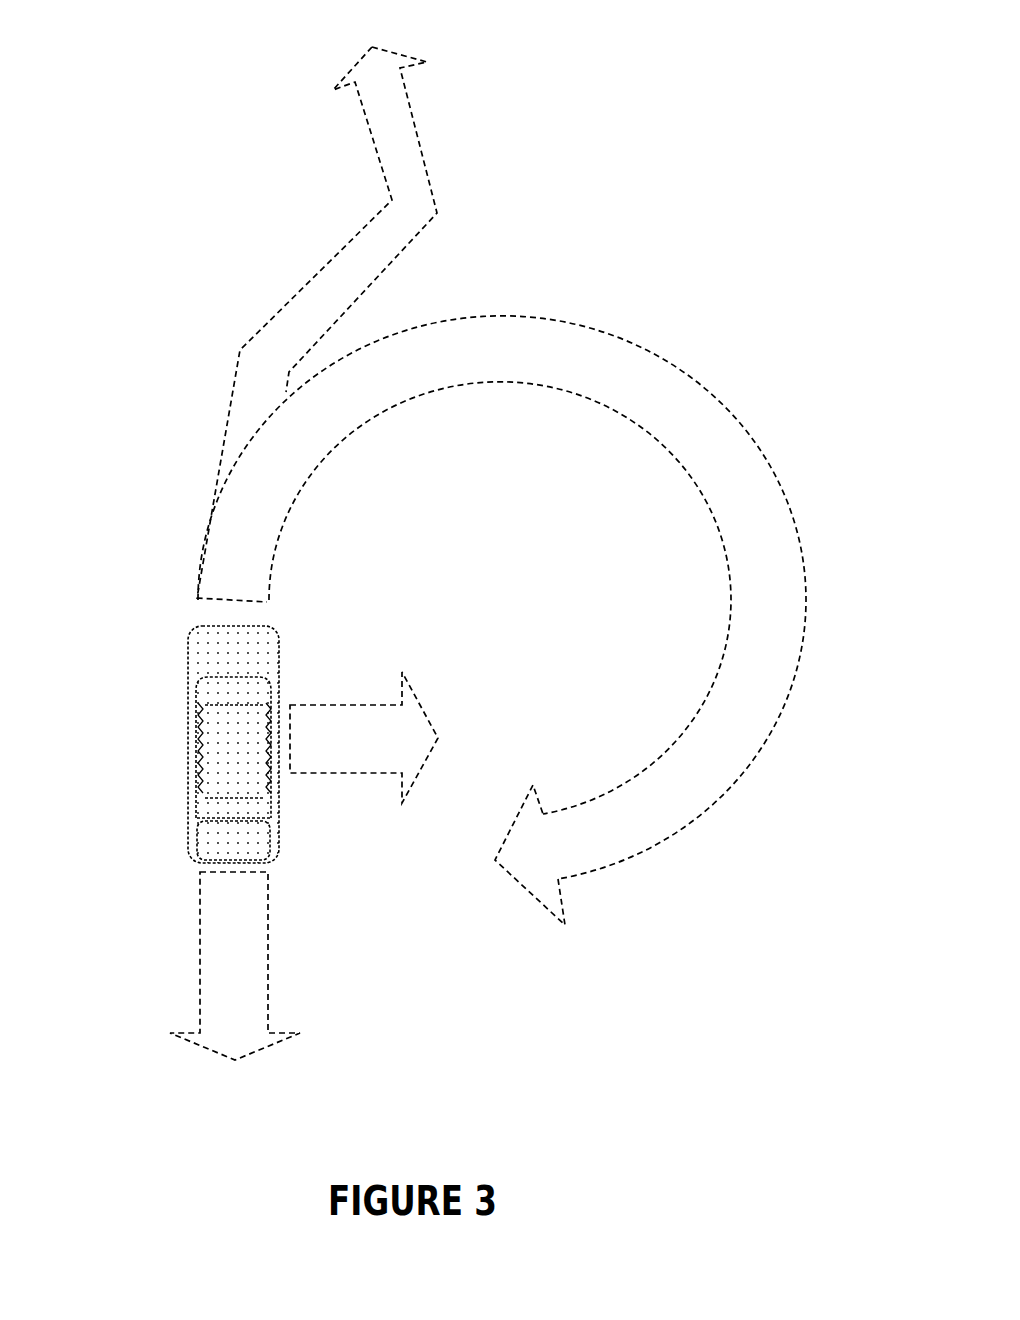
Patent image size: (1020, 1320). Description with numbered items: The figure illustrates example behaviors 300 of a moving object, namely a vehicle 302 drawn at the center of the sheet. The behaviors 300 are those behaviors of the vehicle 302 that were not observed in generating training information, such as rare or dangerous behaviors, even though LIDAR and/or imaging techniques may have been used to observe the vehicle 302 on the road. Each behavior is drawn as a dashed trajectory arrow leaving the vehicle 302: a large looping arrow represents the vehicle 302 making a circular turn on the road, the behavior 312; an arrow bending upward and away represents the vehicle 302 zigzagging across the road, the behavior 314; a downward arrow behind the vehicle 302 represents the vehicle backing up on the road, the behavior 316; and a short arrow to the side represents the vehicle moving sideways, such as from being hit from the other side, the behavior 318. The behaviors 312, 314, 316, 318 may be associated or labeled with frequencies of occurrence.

The behaviors 300 is at (636, 69).
The vehicle 302 is at (193, 742).
The behavior 312 is at (512, 315).
The behavior 314 is at (423, 149).
The behavior 316 is at (267, 957).
The behavior 318 is at (343, 705).